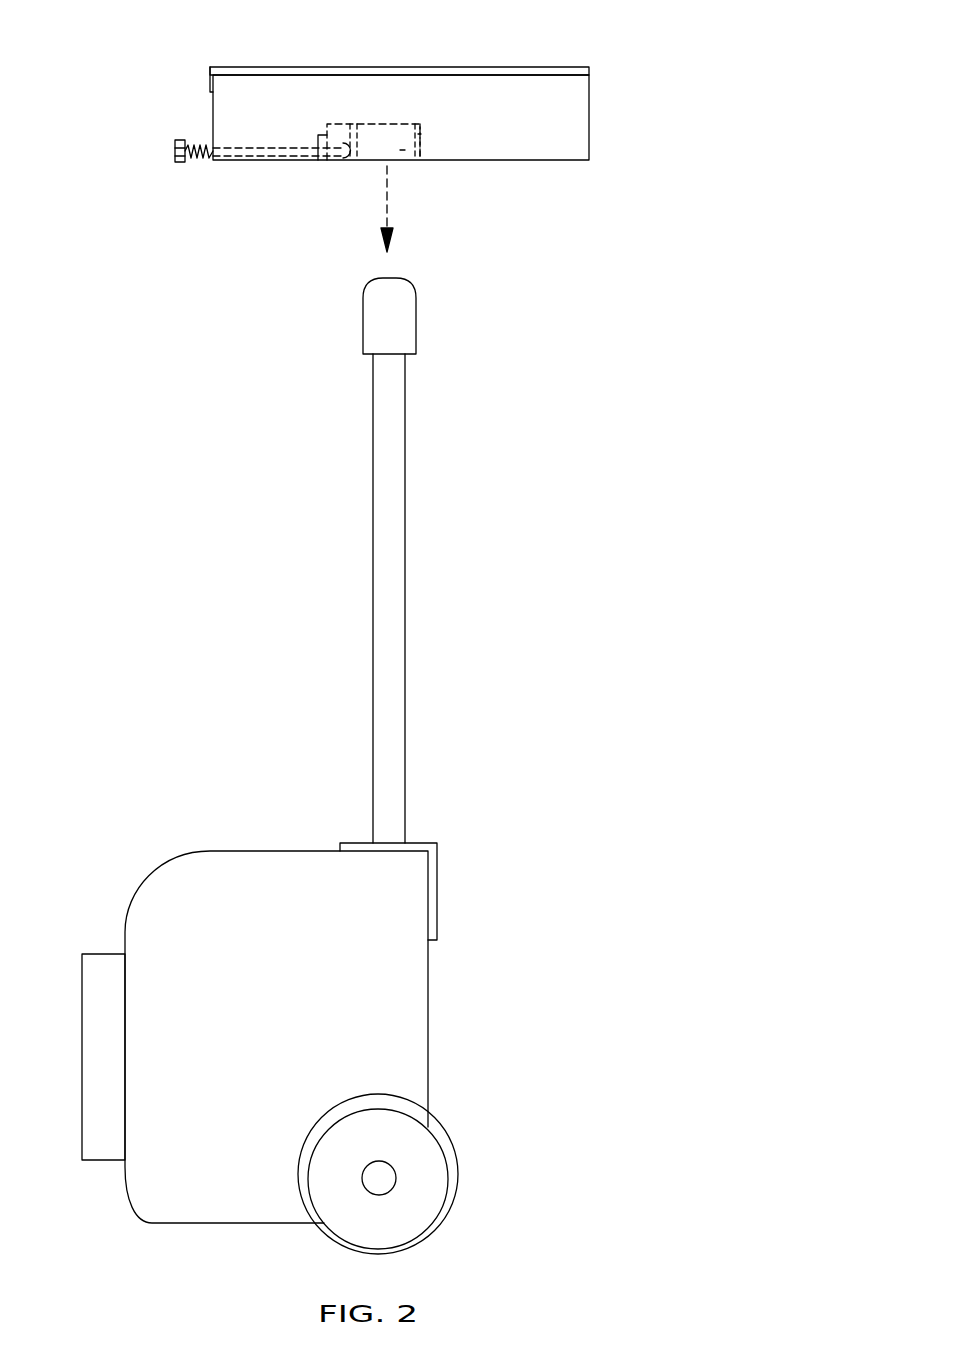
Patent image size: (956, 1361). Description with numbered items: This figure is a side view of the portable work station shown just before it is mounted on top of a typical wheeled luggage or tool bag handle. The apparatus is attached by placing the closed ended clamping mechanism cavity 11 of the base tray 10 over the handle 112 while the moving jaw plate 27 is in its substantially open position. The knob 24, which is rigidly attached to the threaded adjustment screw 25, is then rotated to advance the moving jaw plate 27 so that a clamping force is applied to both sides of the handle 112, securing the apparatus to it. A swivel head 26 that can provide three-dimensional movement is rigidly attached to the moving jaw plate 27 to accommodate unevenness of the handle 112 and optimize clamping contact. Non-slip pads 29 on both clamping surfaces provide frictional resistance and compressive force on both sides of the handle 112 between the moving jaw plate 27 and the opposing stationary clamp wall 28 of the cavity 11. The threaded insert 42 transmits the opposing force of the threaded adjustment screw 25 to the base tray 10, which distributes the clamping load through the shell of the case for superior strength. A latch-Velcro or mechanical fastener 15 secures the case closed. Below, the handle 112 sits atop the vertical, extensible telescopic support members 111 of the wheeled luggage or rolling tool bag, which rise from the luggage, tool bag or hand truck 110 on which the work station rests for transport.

The base tray 10 is at (590, 145).
The closed ended clamping mechanism cavity 11 is at (402, 152).
The latch-Velcro or mechanical fastener 15 is at (212, 86).
The knob 24 is at (178, 140).
The threaded adjustment screw 25 is at (206, 163).
The swivel head 26 is at (343, 143).
The moving jaw plate 27 is at (347, 161).
The stationary clamp wall 28 is at (420, 135).
The non-slip pads 29 is at (353, 123).
The threaded insert 42 is at (322, 162).
The luggage, tool bag or hand truck 110 is at (168, 887).
The vertical extensible telescopic support members 111 is at (385, 568).
The luggage handle 112 is at (540, 72).